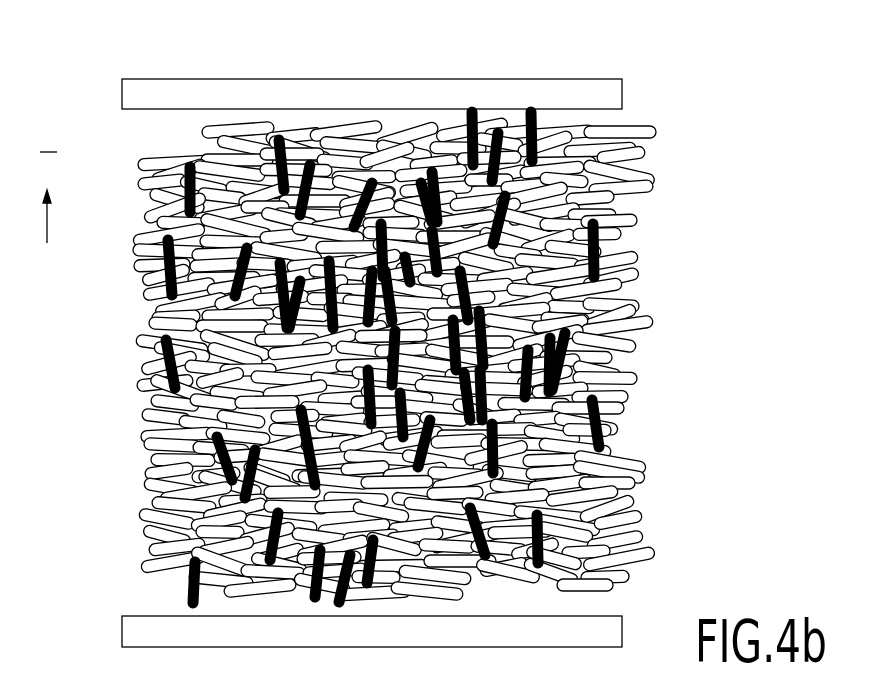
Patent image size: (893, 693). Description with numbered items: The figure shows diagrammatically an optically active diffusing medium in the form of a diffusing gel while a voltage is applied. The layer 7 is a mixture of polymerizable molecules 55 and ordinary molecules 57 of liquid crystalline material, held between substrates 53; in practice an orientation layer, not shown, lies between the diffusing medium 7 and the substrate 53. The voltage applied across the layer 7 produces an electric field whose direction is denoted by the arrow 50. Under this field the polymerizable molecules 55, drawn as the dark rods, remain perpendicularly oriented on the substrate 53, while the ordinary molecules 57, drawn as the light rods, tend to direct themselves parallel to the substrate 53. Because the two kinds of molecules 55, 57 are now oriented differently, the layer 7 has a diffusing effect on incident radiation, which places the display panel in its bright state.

The layer 7 is at (647, 205).
The arrow 50 is at (47, 227).
The substrate 53 is at (617, 87).
The polymerizable molecules 55 is at (503, 130).
The ordinary molecules 57 is at (377, 150).